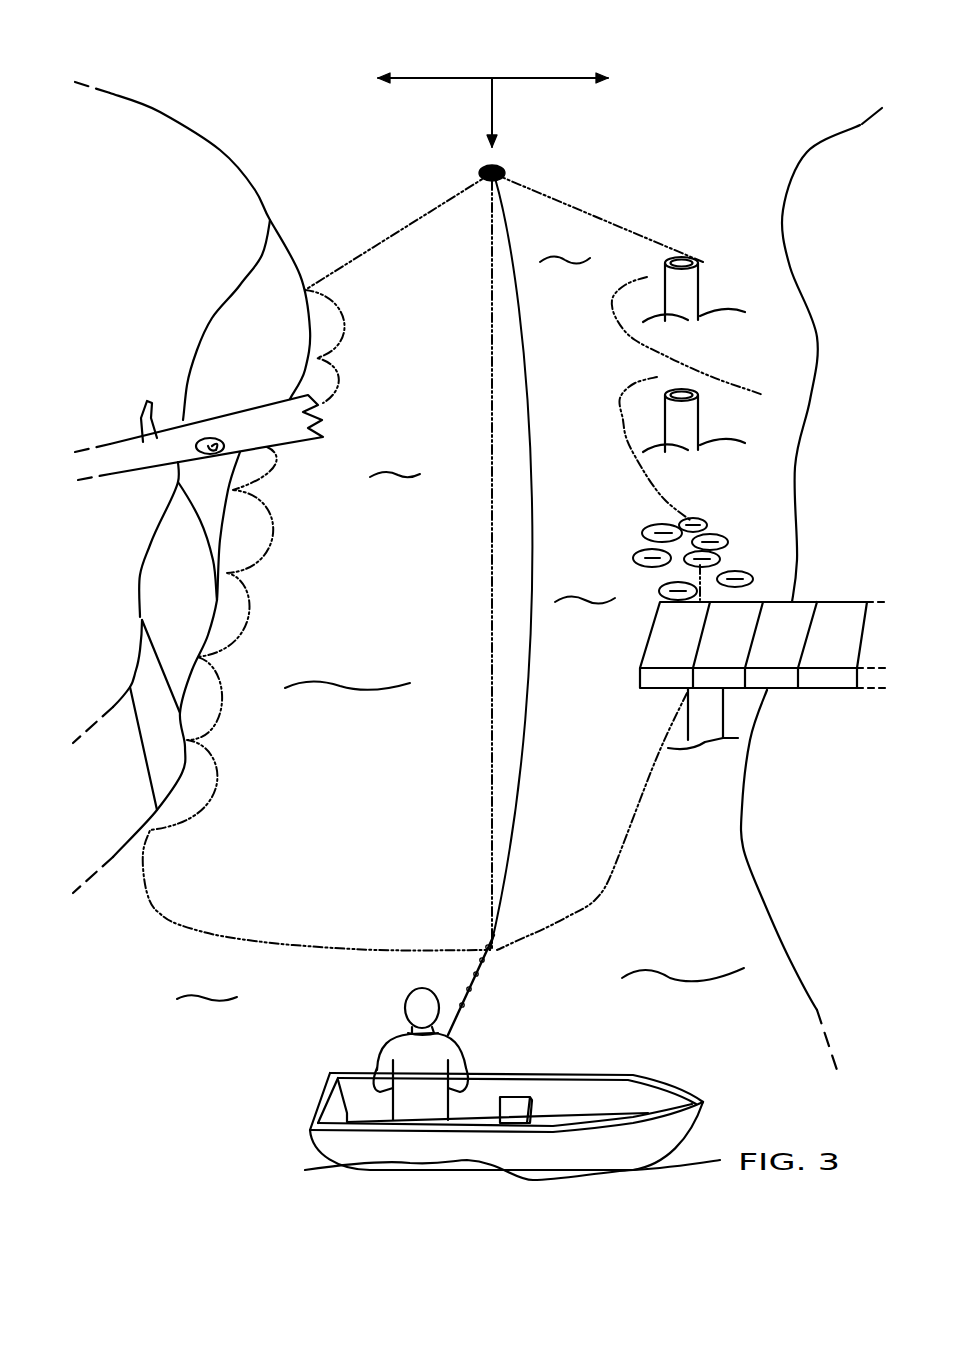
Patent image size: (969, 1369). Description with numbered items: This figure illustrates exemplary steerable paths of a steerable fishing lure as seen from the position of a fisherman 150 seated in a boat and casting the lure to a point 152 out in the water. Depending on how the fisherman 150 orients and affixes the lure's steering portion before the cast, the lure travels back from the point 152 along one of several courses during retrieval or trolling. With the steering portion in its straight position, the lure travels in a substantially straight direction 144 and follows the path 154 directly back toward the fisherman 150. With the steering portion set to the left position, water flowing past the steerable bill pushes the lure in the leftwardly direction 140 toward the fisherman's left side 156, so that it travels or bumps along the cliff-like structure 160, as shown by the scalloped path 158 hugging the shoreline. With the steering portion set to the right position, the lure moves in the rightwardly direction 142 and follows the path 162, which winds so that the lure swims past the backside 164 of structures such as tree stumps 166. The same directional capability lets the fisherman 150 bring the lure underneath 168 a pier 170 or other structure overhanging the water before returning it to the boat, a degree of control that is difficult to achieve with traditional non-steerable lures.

The leftwardly direction 140 is at (377, 76).
The rightwardly direction 142 is at (607, 76).
The substantially straight direction 144 is at (488, 140).
The fisherman 150 is at (417, 1055).
The point 152 is at (503, 168).
The path 154 is at (490, 428).
The fisherman's left side 156 is at (353, 1025).
The path 158 is at (400, 230).
The cliff-like structure 160 is at (305, 198).
The path 162 is at (622, 226).
The backside 164 is at (713, 275).
The tree stumps 166 is at (745, 312).
The underneath 168 is at (652, 707).
The pier 170 is at (818, 630).